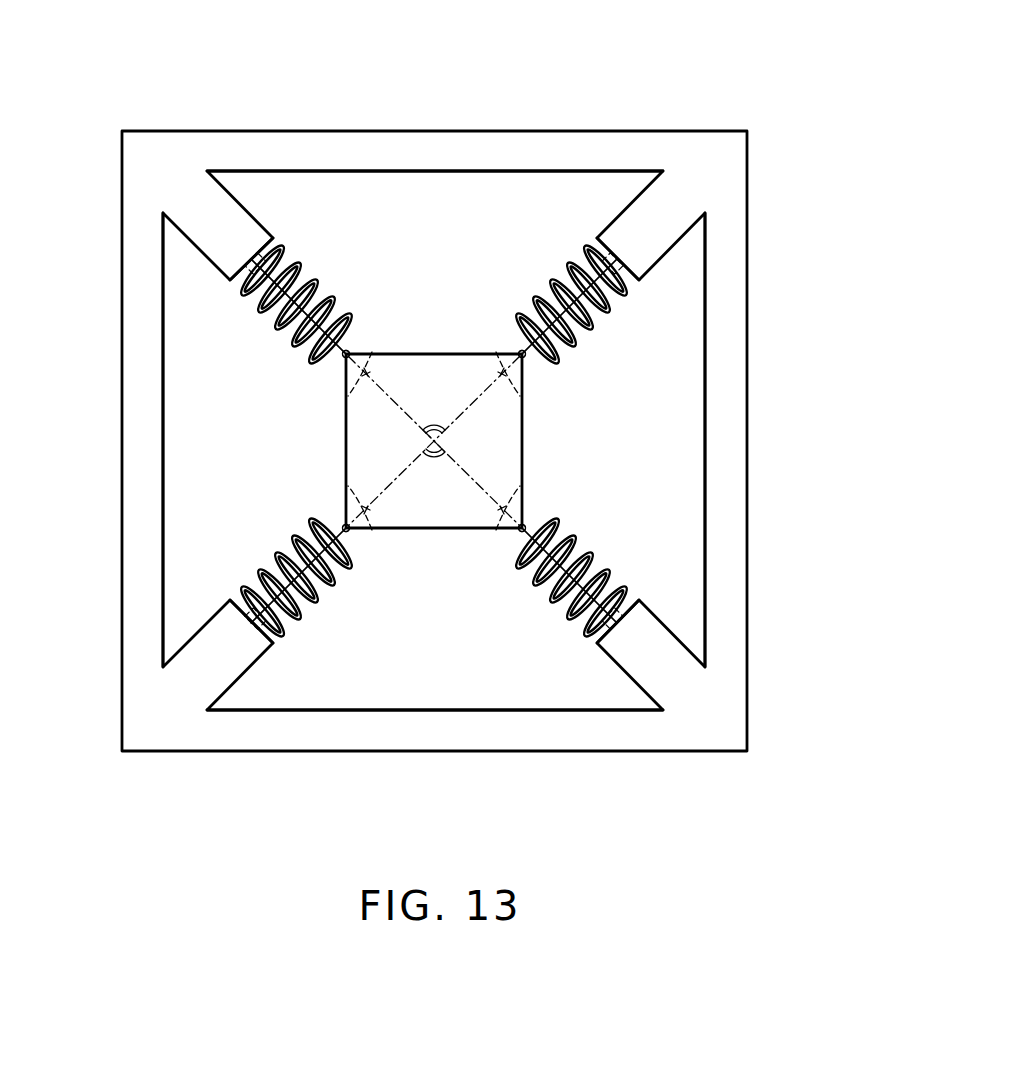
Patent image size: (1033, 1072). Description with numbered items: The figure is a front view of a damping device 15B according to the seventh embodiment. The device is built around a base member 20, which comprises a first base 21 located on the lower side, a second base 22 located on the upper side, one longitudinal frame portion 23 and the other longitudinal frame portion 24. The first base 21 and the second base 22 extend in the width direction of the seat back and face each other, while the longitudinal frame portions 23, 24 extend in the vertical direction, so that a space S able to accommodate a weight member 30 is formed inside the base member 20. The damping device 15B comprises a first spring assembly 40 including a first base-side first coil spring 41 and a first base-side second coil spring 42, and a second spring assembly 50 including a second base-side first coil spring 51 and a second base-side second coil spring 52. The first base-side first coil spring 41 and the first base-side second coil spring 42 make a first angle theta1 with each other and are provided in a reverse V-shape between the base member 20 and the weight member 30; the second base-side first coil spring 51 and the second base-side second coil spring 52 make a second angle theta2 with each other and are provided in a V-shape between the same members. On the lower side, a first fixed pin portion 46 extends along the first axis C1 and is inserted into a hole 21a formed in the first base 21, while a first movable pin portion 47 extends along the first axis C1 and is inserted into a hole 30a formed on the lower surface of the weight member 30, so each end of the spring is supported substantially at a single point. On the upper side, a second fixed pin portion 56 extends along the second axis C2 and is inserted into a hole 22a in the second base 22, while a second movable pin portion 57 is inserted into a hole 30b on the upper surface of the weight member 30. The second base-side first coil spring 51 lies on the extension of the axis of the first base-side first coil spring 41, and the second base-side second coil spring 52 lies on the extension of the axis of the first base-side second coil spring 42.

The damping device 15B is at (729, 75).
The base member 20 is at (609, 756).
The first base 21 is at (440, 752).
The hole 21a is at (270, 646).
The second base 22 is at (442, 140).
The hole 22a is at (262, 246).
The one longitudinal frame portion 23 is at (135, 453).
The other longitudinal frame portion 24 is at (737, 452).
The weight member 30 is at (505, 441).
The hole 30a is at (352, 532).
The hole 30b is at (352, 352).
The first spring assembly 40 is at (226, 568).
The first base-side first coil spring 41 is at (313, 605).
The first base-side second coil spring 42 is at (563, 612).
The first fixed pin portion 46 is at (232, 632).
The first movable pin portion 47 is at (348, 486).
The second spring assembly 50 is at (226, 342).
The second base-side first coil spring 51 is at (560, 280).
The second base-side second coil spring 52 is at (317, 280).
The second fixed pin portion 56 is at (232, 250).
The second movable pin portion 57 is at (348, 396).
The first axis C1 is at (304, 566).
The second axis C2 is at (312, 336).
The space S is at (662, 516).
The first angle theta1 is at (436, 466).
The second angle theta2 is at (436, 414).